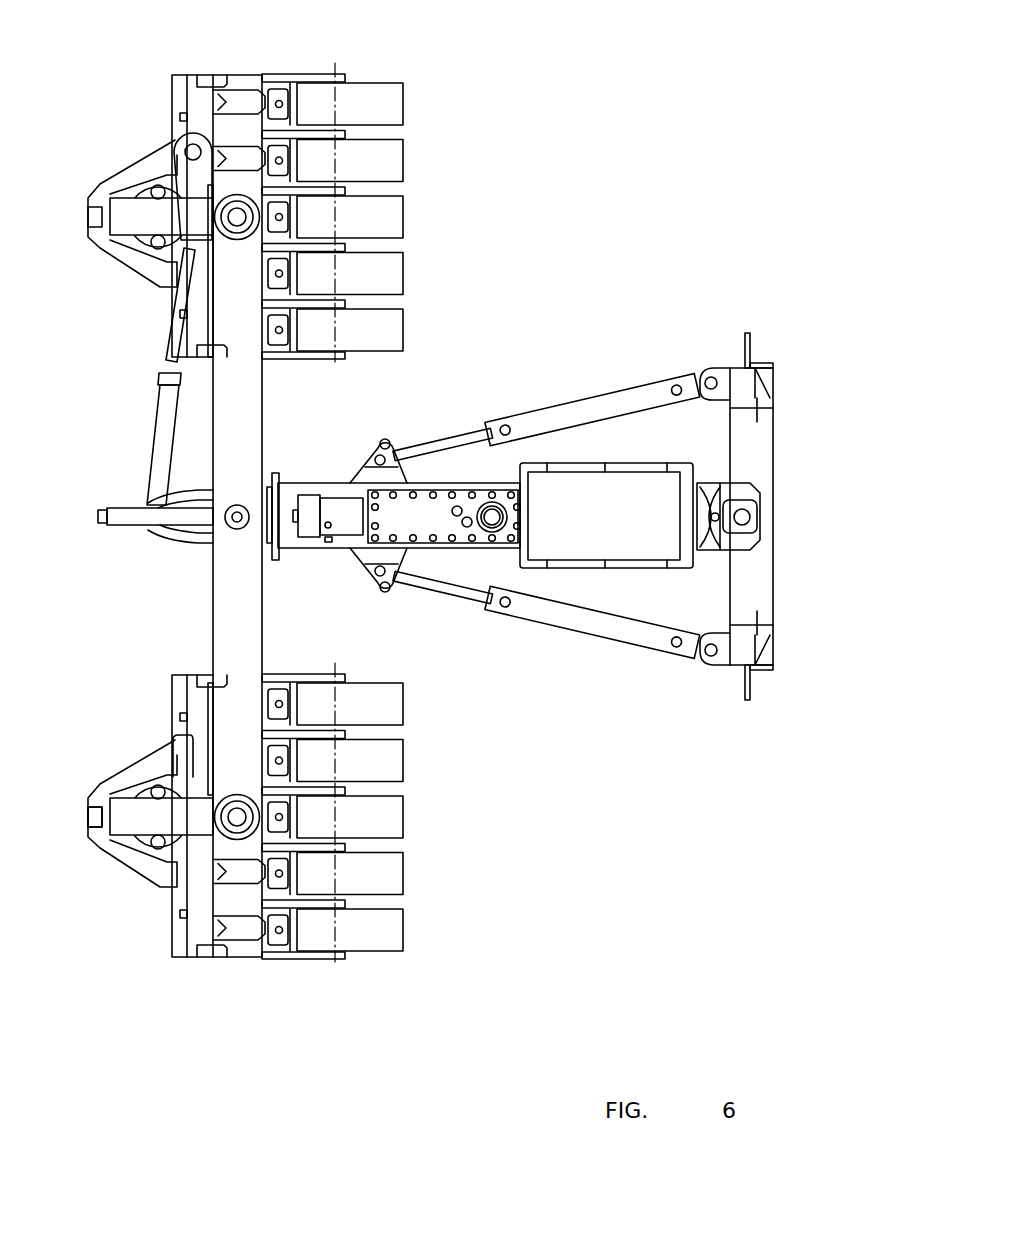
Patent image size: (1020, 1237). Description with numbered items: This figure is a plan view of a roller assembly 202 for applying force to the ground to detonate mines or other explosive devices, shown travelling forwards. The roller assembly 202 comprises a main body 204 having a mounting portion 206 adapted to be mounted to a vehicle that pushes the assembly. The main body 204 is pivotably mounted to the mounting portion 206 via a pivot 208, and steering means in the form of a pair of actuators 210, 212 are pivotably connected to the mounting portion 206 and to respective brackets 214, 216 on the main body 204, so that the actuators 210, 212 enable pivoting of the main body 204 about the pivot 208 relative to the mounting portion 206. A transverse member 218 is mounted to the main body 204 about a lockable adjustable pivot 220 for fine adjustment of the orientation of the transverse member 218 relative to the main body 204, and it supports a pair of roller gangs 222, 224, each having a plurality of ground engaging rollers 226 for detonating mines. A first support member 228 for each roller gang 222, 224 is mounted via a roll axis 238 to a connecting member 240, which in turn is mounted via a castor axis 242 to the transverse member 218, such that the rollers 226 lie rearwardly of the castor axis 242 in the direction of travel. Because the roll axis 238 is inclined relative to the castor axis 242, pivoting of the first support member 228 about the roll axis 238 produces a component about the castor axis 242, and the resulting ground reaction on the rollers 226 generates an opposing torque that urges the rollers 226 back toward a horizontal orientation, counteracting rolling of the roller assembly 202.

The roller assembly 202 is at (693, 158).
The main body 204 is at (427, 513).
The mounting portion 206 is at (757, 583).
The pivot 208 is at (747, 510).
The actuator 210 is at (600, 410).
The actuator 212 is at (617, 632).
The bracket 214 is at (373, 450).
The bracket 216 is at (368, 555).
The transverse member 218 is at (237, 615).
The lockable adjustable pivot 220 is at (237, 527).
The roller gang 222 is at (365, 53).
The roller gang 224 is at (527, 948).
The ground engaging roller 226 is at (390, 160).
The first support member 228 is at (180, 702).
The roll axis 238 is at (80, 817).
The connecting member 240 is at (168, 817).
The castor axis 242 is at (237, 822).